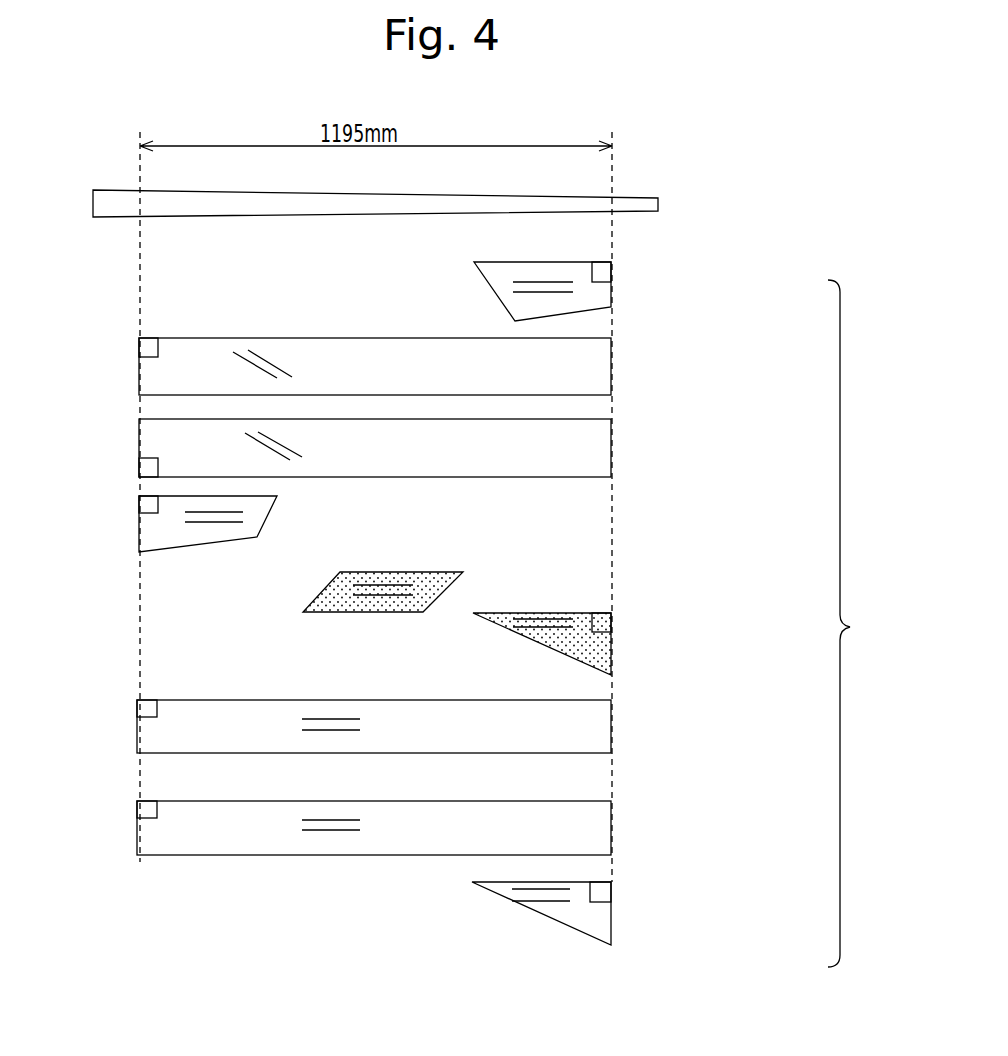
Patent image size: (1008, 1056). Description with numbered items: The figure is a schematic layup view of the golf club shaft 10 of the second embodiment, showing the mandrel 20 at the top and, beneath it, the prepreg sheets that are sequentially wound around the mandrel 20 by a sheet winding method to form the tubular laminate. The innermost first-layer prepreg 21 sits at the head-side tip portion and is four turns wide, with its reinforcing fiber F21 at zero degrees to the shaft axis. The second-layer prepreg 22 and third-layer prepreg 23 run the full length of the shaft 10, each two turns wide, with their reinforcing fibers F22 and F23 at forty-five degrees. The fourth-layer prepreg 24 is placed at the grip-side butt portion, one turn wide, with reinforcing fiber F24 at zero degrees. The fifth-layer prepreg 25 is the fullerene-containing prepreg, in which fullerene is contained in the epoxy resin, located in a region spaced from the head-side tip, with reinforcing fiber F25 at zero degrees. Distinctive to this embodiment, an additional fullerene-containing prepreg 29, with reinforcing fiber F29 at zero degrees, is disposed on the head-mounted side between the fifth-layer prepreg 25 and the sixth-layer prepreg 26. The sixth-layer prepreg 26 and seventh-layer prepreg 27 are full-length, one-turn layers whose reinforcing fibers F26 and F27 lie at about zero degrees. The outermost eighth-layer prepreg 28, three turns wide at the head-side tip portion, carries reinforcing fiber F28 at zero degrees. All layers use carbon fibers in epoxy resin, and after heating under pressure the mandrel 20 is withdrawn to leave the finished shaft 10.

The golf club shaft 10 is at (883, 636).
The mandrel 20 is at (637, 198).
The first-layer prepreg 21 is at (612, 290).
The second-layer prepreg 22 is at (590, 358).
The third-layer prepreg 23 is at (590, 452).
The fourth-layer prepreg 24 is at (152, 532).
The fifth-layer fullerene-containing prepreg 25 is at (320, 585).
The sixth-layer prepreg 26 is at (590, 725).
The seventh-layer prepreg 27 is at (590, 825).
The eighth-layer prepreg 28 is at (590, 920).
The fullerene-containing prepreg 29 is at (595, 647).
The reinforcing fiber F21 is at (537, 280).
The reinforcing fiber F22 is at (278, 348).
The reinforcing fiber F23 is at (278, 445).
The reinforcing fiber F24 is at (215, 523).
The reinforcing fiber F25 is at (378, 583).
The reinforcing fiber F26 is at (322, 717).
The reinforcing fiber F27 is at (330, 818).
The reinforcing fiber F28 is at (540, 900).
The reinforcing fiber F29 is at (550, 617).